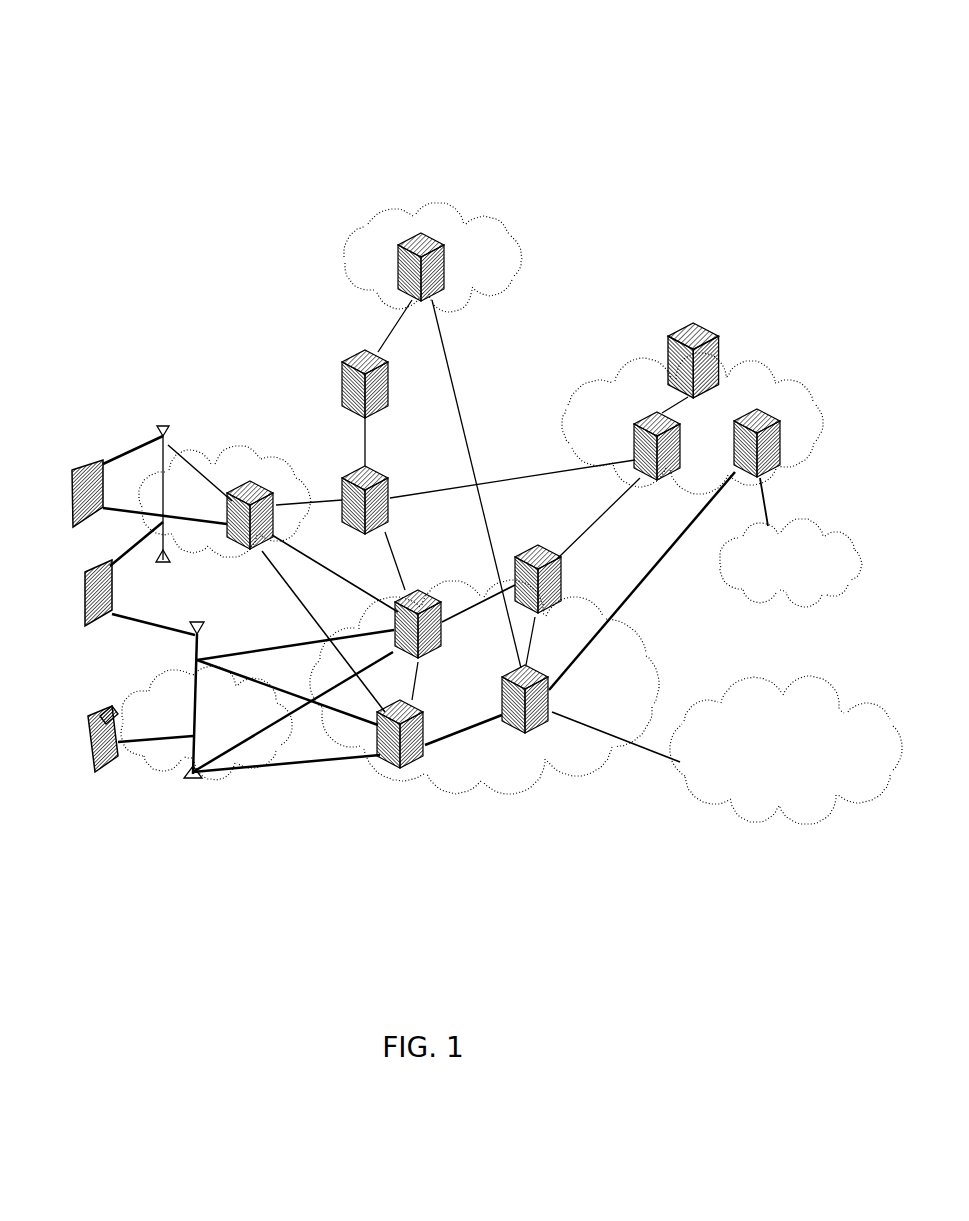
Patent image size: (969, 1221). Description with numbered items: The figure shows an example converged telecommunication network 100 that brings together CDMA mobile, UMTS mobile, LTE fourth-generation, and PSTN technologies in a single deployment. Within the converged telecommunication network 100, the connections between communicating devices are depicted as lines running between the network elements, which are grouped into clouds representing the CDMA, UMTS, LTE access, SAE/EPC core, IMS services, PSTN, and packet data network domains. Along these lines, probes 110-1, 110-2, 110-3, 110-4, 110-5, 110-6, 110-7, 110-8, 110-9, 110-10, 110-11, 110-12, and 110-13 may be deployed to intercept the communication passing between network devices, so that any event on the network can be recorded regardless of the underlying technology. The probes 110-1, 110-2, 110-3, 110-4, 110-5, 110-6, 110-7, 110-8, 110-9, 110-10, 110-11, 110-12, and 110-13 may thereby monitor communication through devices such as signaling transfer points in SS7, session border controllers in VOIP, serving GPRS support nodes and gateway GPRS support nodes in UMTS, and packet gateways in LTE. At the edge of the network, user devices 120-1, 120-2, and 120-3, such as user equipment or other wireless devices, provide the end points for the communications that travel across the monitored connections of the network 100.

The converged telecommunication network 100 is at (130, 88).
The probe 110-1 is at (379, 326).
The probe 110-2 is at (309, 493).
The probe 110-3 is at (335, 573).
The probe 110-4 is at (295, 640).
The probe 110-5 is at (323, 644).
The probe 110-6 is at (286, 772).
The probe 110-7 is at (512, 479).
The probe 110-8 is at (478, 600).
The probe 110-9 is at (468, 721).
The probe 110-10 is at (599, 518).
The probe 110-11 is at (642, 581).
The probe 110-12 is at (616, 734).
The probe 110-13 is at (794, 502).
The user device 120-1 is at (121, 481).
The user device 120-2 is at (111, 597).
The user device 120-3 is at (111, 739).